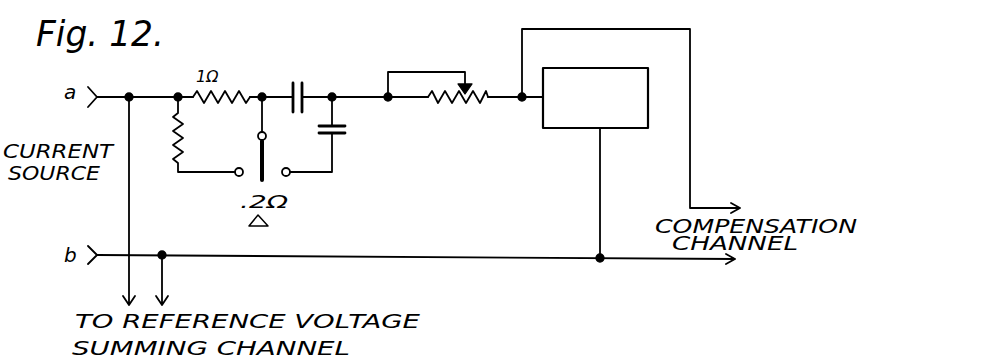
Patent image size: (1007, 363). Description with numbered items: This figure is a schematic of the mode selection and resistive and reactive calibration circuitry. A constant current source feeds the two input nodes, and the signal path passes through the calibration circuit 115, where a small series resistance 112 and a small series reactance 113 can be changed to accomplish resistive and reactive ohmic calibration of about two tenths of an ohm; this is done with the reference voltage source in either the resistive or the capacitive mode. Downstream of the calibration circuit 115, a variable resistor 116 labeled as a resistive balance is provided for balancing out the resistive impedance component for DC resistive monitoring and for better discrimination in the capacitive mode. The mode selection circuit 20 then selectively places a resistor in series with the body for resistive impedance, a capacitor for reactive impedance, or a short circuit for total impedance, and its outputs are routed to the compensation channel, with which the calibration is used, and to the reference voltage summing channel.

The small series resistance 112 is at (165, 176).
The small series reactance 113 is at (354, 161).
The calibration circuit 115 is at (264, 74).
The variable resistor 116 is at (444, 122).
The mode selection circuit 20 is at (555, 140).